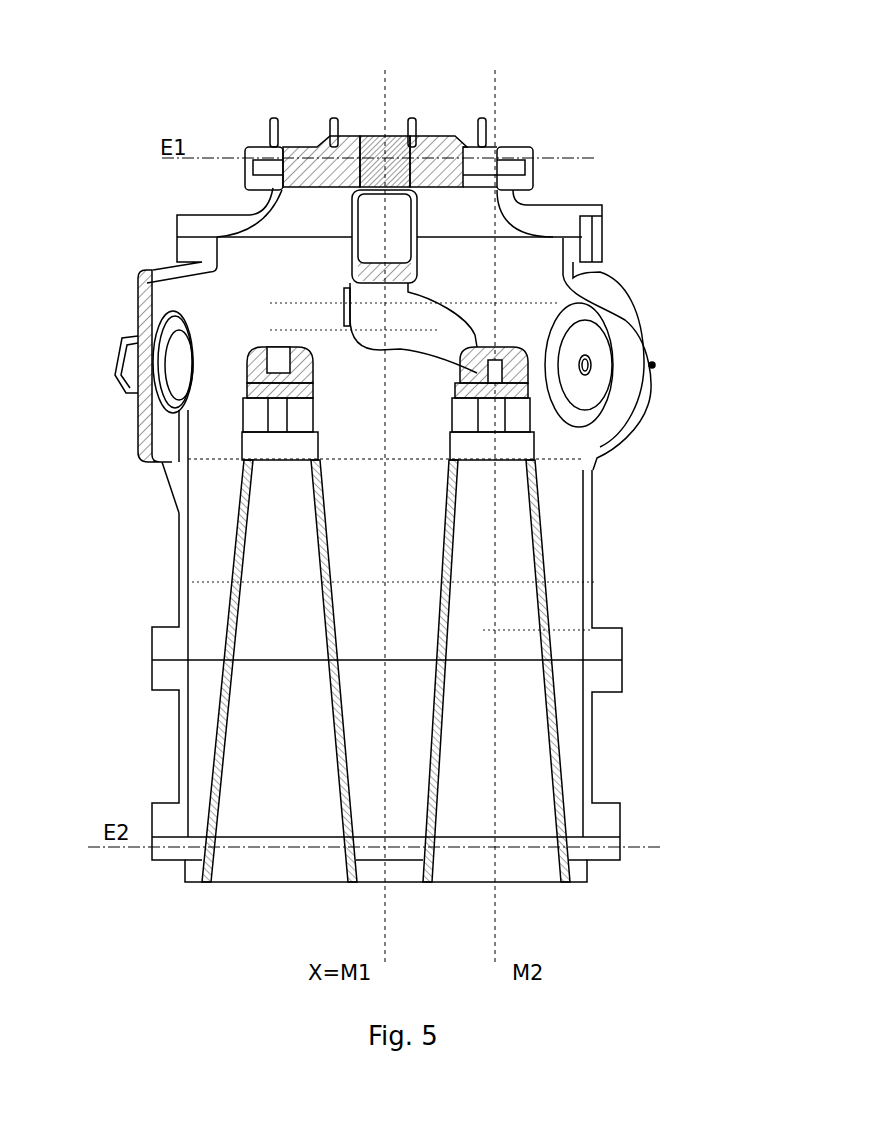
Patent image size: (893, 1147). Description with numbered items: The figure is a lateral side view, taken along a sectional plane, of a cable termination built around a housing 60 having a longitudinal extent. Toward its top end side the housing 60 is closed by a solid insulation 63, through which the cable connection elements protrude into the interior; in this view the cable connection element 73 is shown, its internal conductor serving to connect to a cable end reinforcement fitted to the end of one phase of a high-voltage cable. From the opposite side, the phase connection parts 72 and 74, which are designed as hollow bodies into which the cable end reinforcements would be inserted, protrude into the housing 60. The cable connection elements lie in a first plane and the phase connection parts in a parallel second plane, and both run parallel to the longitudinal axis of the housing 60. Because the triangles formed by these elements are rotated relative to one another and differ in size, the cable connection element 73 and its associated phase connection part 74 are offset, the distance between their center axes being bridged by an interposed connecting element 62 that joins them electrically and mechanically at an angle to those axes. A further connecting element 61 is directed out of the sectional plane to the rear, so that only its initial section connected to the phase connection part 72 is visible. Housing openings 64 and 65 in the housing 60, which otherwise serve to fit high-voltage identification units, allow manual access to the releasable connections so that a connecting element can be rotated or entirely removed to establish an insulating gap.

The housing 60 is at (583, 617).
The connecting element 61 is at (257, 363).
The connecting element 62 is at (430, 312).
The solid insulation 63 is at (322, 155).
The housing opening 64 is at (147, 367).
The housing opening 65 is at (592, 322).
The phase connection part 72 is at (237, 555).
The cable connection element 73 is at (403, 167).
The phase connection part 74 is at (540, 577).